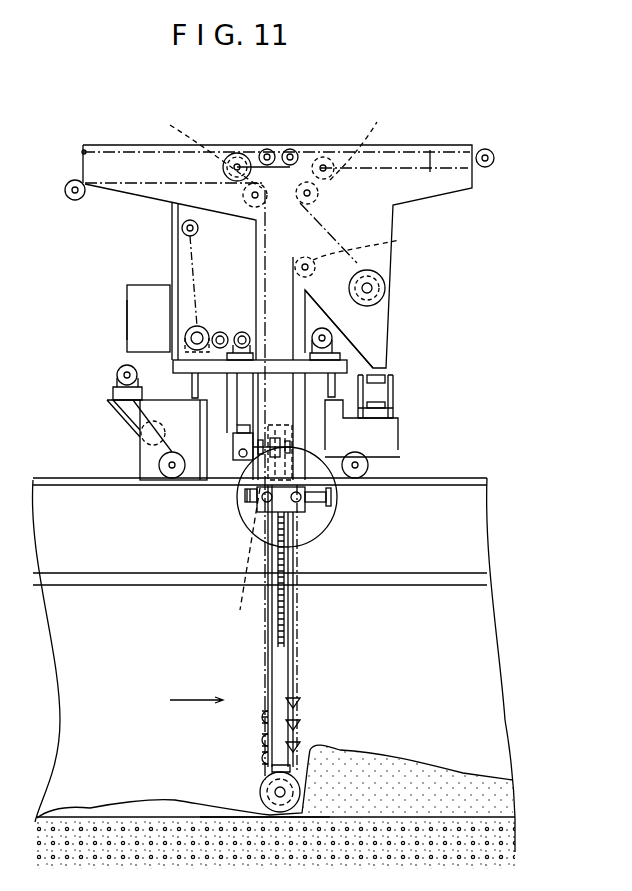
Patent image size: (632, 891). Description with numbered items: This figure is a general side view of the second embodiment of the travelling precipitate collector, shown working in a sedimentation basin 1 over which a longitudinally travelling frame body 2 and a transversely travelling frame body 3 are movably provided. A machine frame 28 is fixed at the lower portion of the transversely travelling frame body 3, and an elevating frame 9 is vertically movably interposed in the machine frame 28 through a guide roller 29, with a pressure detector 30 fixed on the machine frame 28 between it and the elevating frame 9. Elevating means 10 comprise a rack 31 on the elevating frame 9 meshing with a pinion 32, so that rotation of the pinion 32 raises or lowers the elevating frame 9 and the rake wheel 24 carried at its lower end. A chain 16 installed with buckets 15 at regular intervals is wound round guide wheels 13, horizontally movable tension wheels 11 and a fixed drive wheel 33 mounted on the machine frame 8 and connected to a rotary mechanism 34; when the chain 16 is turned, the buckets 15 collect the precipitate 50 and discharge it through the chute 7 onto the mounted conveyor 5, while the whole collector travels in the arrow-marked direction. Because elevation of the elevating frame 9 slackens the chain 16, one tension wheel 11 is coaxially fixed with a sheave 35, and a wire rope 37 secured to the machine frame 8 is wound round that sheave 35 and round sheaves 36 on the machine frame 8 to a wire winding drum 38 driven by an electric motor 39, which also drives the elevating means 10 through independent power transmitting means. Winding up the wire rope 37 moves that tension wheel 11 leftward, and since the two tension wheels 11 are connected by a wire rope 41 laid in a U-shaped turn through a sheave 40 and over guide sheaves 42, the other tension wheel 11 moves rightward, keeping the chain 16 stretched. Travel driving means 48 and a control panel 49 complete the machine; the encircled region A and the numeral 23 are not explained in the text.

The sedimentation basin 1 is at (500, 732).
The longitudinally travelling frame body 2 is at (400, 422).
The transversely travelling frame body 3 is at (347, 363).
The mounted conveyor 5 is at (395, 388).
The chute 7 is at (385, 312).
The machine frame 8 is at (110, 153).
The elevating frame 9 is at (270, 668).
The elevating means 10 is at (243, 440).
The tension wheels 11 is at (238, 165).
The guide wheels 13 is at (288, 230).
The buckets 15 is at (300, 753).
The chain 16 is at (300, 685).
The trench bottom 23 is at (272, 820).
The rake wheel 24 is at (297, 813).
The machine frame 28 is at (273, 450).
The guide roller 29 is at (235, 561).
The pressure detector 30 is at (313, 520).
The rack 31 is at (287, 628).
The pinion 32 is at (293, 440).
The fixed drive wheel 33 is at (380, 290).
The rotary mechanism 34 is at (337, 347).
The sheave 35 is at (234, 156).
The sheaves 36 is at (68, 199).
The wire rope 37 is at (103, 210).
The wire winding drum 38 is at (173, 328).
The electric motor 39 is at (242, 338).
The sheave 40 is at (493, 152).
The wire rope 41 is at (431, 150).
The guide sheaves 42 is at (273, 152).
The travel driving means 48 is at (118, 367).
The control panel 49 is at (133, 322).
The precipitate 50 is at (513, 797).
The detail circle A is at (337, 498).